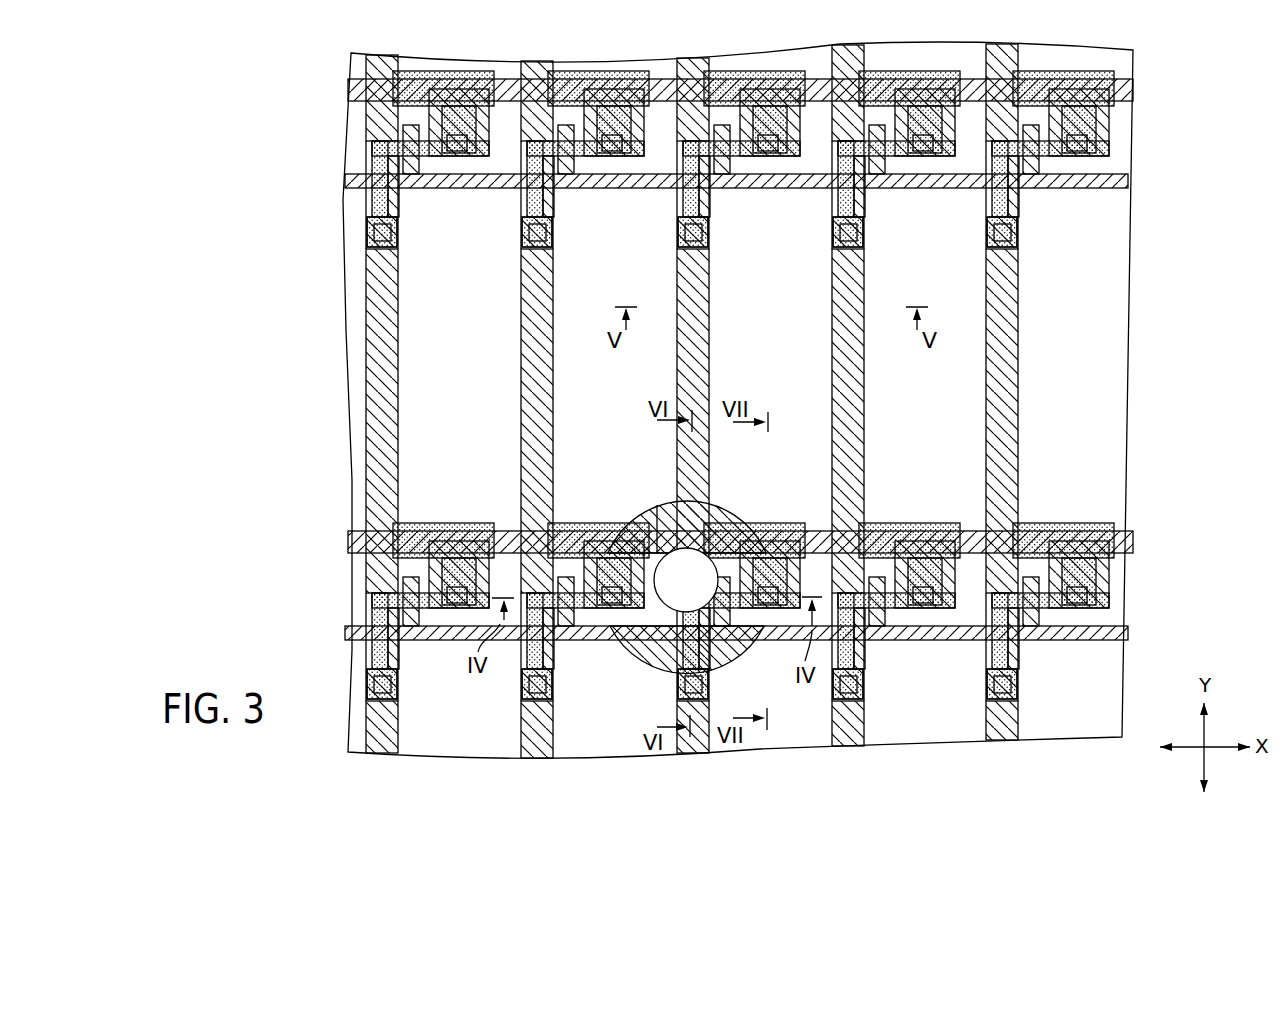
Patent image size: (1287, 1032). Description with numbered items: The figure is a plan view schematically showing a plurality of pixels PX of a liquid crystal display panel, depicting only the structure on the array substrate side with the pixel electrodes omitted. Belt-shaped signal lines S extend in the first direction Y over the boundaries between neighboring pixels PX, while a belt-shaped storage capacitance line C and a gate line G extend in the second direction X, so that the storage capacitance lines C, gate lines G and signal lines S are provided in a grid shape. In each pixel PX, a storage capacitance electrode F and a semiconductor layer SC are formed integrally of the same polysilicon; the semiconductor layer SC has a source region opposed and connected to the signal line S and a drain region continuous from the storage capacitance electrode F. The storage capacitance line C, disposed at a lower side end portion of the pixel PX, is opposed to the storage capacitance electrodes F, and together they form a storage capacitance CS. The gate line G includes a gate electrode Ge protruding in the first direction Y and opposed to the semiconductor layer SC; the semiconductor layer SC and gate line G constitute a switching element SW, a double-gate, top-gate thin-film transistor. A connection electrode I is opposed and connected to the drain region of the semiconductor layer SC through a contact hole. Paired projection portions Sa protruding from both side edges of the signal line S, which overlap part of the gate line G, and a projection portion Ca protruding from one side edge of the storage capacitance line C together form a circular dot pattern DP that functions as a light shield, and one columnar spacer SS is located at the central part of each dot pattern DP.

The signal line S is at (377, 753).
The storage capacitance line C is at (348, 88).
The gate line G is at (345, 184).
The pixel PX is at (812, 262).
The storage capacitance CS is at (582, 514).
The storage capacitance electrode F is at (612, 520).
The switching element SW is at (738, 432).
The gate electrode Ge is at (575, 640).
The semiconductor layer SC is at (500, 530).
The projection portion Sa is at (628, 655).
The connection electrode I is at (607, 642).
The dot pattern DP is at (642, 497).
The projection portion Ca is at (710, 503).
The columnar spacer SS is at (657, 505).